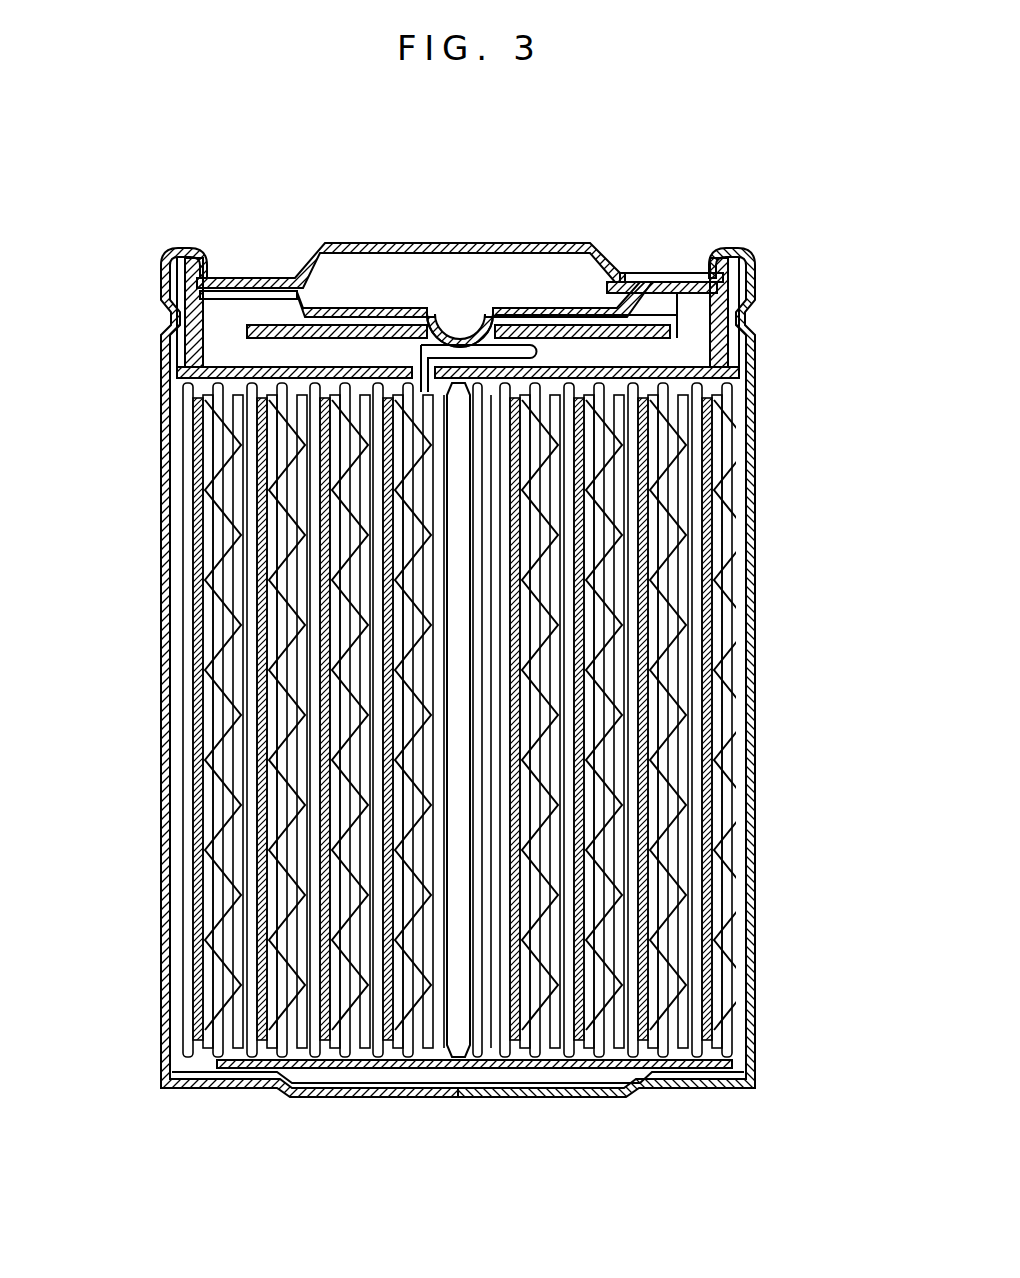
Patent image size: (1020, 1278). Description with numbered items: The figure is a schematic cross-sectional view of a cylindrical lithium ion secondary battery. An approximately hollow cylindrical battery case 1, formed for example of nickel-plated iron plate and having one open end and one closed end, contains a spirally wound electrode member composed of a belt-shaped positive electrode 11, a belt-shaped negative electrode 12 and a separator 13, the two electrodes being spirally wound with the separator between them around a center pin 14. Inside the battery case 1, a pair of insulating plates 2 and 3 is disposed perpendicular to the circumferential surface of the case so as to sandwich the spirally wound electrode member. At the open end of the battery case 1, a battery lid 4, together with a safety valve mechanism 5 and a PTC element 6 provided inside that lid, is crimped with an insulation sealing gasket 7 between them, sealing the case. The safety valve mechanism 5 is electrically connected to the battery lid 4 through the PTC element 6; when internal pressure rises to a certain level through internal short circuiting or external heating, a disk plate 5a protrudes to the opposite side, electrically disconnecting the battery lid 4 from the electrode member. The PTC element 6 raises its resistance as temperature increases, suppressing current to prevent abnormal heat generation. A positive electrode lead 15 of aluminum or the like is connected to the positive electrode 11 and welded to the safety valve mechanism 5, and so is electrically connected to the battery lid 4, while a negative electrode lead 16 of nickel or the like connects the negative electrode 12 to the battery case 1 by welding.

The battery case 1 is at (758, 490).
The insulating plate 2 is at (748, 357).
The insulating plate 3 is at (737, 1056).
The battery lid 4 is at (403, 243).
The safety valve mechanism 5 is at (567, 305).
The disk plate 5a is at (480, 313).
The PTC element 6 is at (645, 284).
The insulation sealing gasket 7 is at (172, 250).
The positive electrode 11 is at (692, 582).
The negative electrode 12 is at (733, 720).
The separator 13 is at (682, 673).
The center pin 14 is at (455, 546).
The positive electrode lead 15 is at (392, 349).
The negative electrode lead 16 is at (225, 1077).